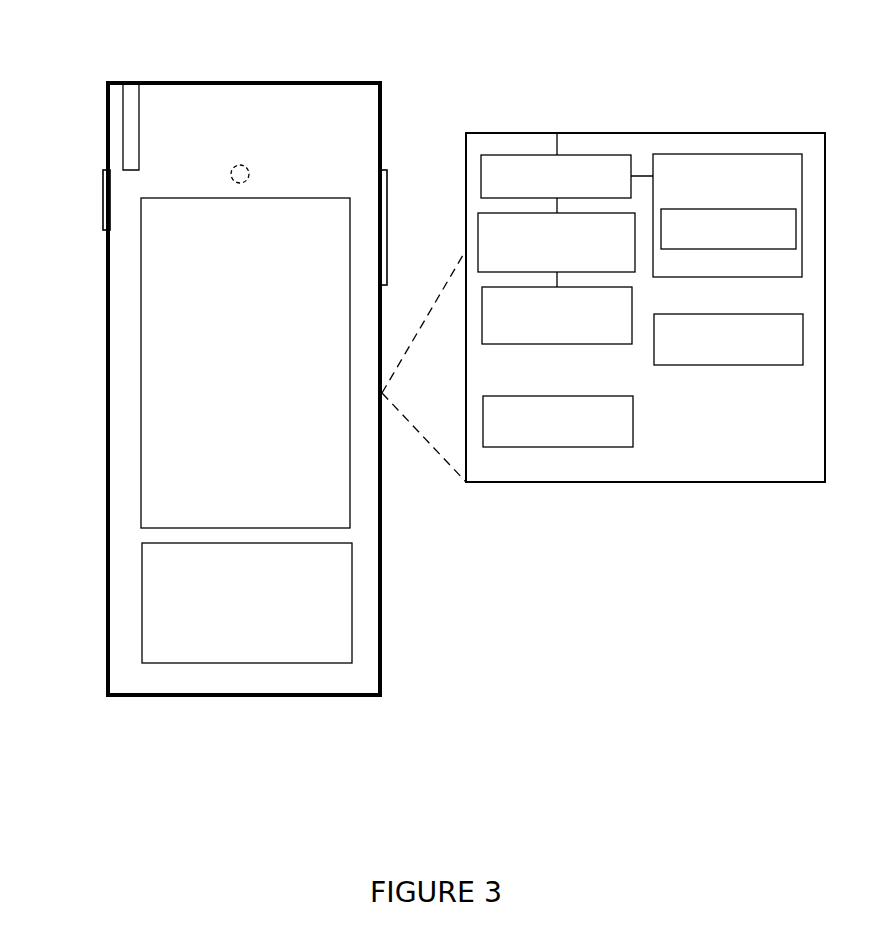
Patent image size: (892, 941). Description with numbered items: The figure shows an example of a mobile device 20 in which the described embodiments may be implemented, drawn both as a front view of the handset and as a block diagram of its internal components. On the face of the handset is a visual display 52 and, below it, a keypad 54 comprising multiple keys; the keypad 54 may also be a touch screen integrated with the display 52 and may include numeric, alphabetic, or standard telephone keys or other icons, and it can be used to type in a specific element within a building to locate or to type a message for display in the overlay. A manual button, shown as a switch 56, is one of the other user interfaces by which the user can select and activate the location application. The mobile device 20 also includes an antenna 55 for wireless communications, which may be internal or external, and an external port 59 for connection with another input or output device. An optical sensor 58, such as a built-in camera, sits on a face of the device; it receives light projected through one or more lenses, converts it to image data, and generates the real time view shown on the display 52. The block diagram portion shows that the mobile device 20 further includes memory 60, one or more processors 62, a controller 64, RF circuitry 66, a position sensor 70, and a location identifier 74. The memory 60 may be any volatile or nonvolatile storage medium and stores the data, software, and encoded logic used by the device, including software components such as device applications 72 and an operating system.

The mobile device 20 is at (228, 82).
The visual display 52 is at (141, 362).
The keypad 54 is at (142, 602).
The antenna 55 is at (124, 105).
The switch 56 is at (387, 192).
The optical sensor 58 is at (250, 173).
The external port 59 is at (103, 200).
The memory 60 is at (728, 154).
The processor 62 is at (557, 133).
The controller 64 is at (478, 243).
The RF circuitry 66 is at (556, 396).
The position sensor 70 is at (572, 344).
The device applications 72 is at (726, 249).
The location identifier 74 is at (722, 365).